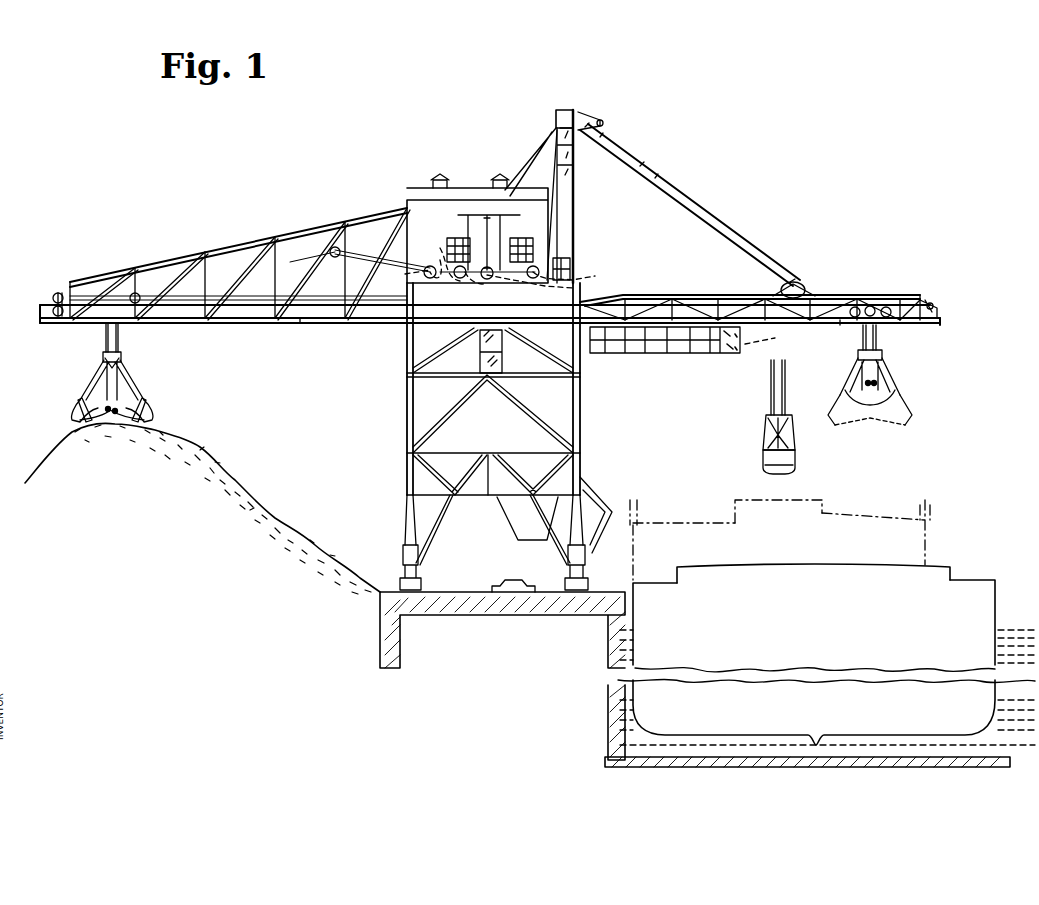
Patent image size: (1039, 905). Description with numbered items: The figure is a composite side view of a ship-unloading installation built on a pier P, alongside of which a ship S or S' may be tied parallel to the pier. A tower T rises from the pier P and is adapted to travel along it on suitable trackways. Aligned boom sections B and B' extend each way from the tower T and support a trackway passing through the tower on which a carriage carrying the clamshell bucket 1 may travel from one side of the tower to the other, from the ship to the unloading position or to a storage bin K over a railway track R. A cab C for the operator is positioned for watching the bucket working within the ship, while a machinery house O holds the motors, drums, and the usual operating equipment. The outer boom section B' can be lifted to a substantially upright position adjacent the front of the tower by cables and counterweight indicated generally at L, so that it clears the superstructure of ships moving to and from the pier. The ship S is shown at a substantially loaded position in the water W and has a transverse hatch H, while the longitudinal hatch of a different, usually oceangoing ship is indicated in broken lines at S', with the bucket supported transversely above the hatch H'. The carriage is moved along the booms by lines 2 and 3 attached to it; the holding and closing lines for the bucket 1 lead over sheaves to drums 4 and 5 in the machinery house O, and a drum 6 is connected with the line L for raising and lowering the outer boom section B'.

The bucket 1 is at (134, 382).
The line 2 is at (338, 268).
The line 3 is at (292, 255).
The drum 4 is at (382, 270).
The drum 5 is at (454, 253).
The drum 6 is at (546, 274).
The boom section B is at (490, 287).
The outer boom section B' is at (769, 320).
The cab C is at (726, 353).
The machinery house O is at (420, 190).
The cables and counterweight L is at (650, 186).
The tower T is at (401, 455).
The storage bin K is at (492, 540).
The railway track R is at (522, 578).
The pier P is at (578, 605).
The ship S is at (826, 640).
The ship S' is at (796, 523).
The transverse hatch H is at (813, 558).
The hatch H' is at (765, 494).
The water W is at (1002, 632).